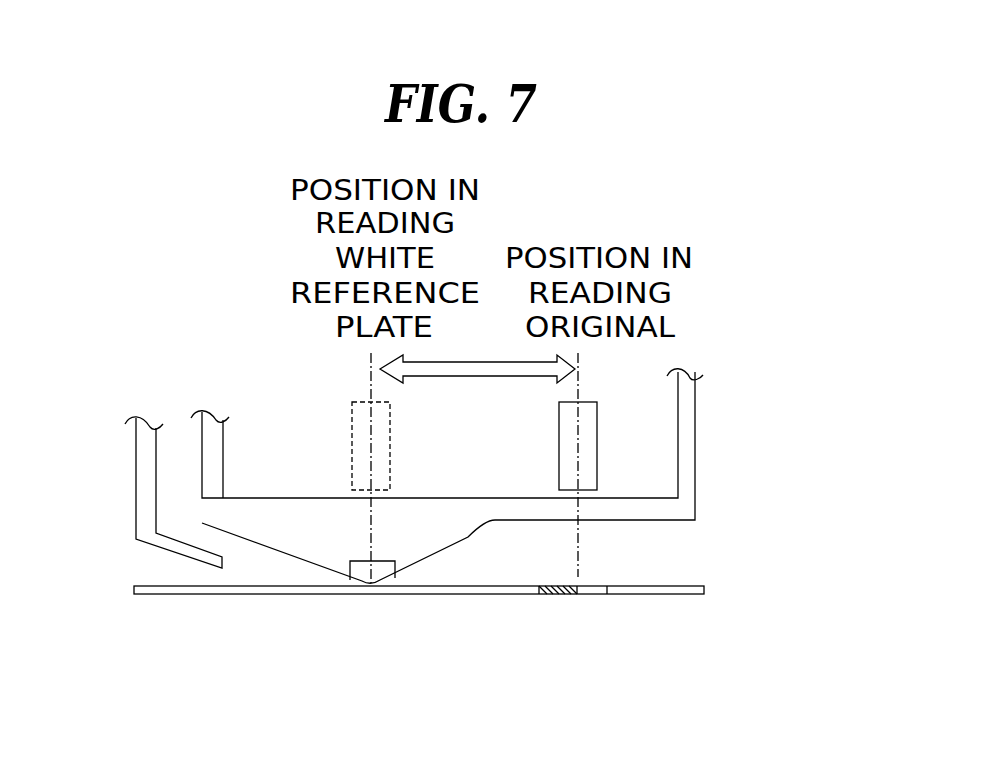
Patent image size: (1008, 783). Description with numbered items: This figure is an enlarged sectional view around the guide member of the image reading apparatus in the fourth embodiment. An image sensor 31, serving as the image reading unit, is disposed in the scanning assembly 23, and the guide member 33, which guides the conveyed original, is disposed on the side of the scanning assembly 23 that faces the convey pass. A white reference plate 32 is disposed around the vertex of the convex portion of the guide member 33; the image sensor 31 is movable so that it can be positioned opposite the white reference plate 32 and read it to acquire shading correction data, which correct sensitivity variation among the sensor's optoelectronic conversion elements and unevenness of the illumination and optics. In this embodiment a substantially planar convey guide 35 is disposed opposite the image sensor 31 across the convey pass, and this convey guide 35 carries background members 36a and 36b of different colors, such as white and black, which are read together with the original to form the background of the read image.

The scanning assembly 23 is at (695, 430).
The image sensor 31 is at (597, 453).
The white reference plate 32 is at (380, 584).
The guide member 33 is at (458, 537).
The convey guide 35 is at (608, 595).
The background member 36a is at (590, 595).
The background member 36b is at (563, 594).